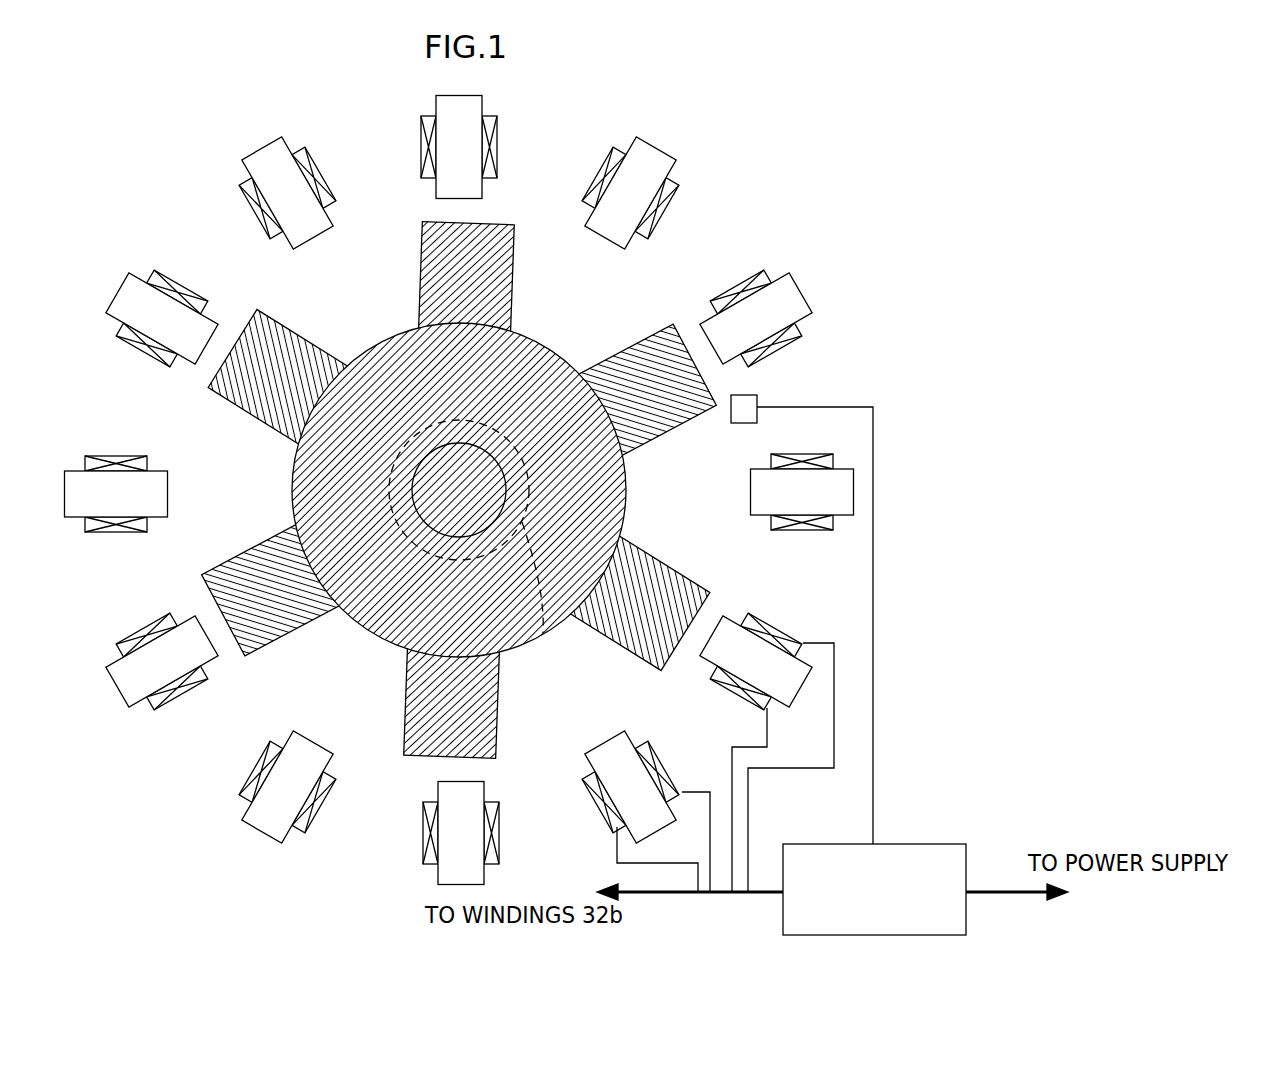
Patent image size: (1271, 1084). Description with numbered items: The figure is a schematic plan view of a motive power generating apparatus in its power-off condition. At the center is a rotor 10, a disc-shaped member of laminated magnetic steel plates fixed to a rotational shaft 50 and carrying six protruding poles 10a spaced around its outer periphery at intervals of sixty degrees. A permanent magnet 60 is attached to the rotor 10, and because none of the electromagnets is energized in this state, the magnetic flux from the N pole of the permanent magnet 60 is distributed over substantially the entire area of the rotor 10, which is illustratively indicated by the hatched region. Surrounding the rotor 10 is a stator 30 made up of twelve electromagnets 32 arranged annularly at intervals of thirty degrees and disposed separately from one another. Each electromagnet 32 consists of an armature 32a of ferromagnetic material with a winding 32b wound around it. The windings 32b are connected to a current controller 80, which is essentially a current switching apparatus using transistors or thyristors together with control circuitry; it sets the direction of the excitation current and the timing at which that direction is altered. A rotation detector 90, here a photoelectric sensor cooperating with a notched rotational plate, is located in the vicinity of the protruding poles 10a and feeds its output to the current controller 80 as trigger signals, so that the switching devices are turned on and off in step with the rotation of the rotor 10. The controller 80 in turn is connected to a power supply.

The rotor 10 is at (428, 441).
The protruding pole 10a is at (260, 312).
The stator 30 is at (511, 465).
The electromagnet 32 is at (699, 173).
The armature 32a is at (632, 152).
The winding 32b is at (667, 188).
The rotational shaft 50 is at (490, 487).
The permanent magnet 60 is at (543, 633).
The current controller 80 is at (917, 858).
The rotation detector 90 is at (752, 403).